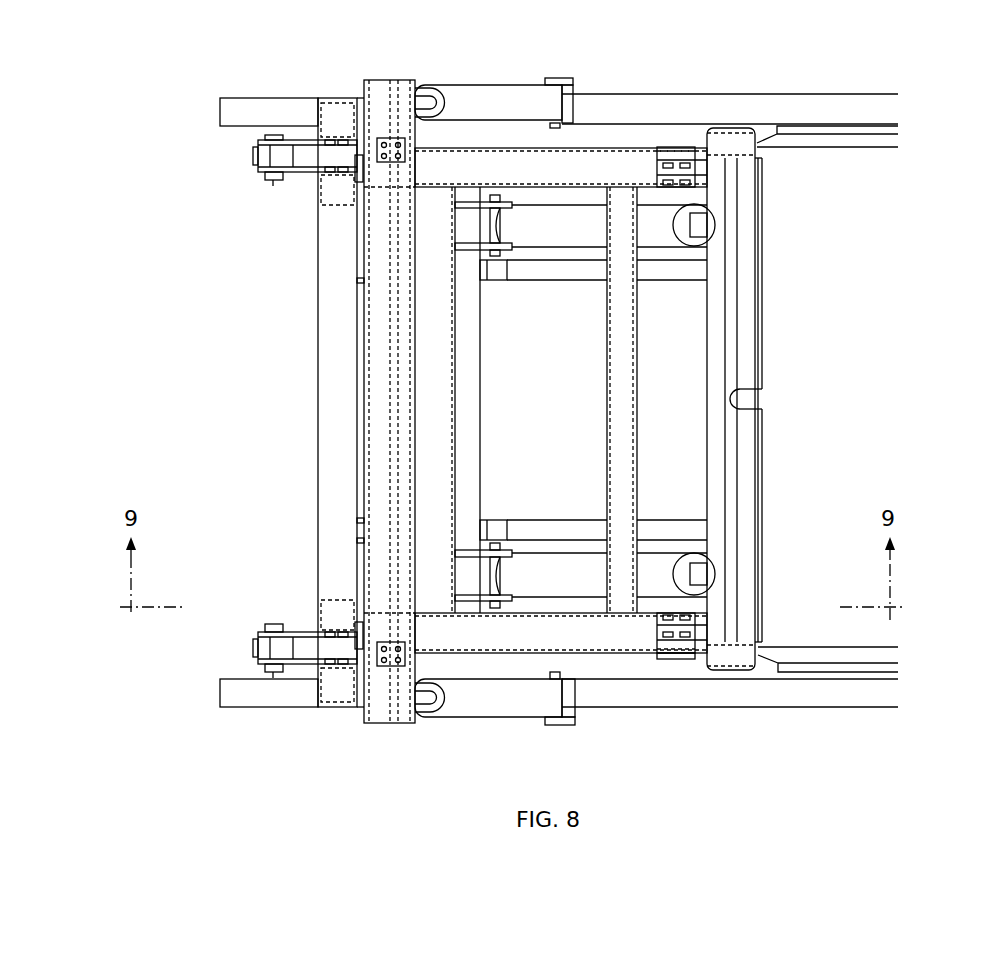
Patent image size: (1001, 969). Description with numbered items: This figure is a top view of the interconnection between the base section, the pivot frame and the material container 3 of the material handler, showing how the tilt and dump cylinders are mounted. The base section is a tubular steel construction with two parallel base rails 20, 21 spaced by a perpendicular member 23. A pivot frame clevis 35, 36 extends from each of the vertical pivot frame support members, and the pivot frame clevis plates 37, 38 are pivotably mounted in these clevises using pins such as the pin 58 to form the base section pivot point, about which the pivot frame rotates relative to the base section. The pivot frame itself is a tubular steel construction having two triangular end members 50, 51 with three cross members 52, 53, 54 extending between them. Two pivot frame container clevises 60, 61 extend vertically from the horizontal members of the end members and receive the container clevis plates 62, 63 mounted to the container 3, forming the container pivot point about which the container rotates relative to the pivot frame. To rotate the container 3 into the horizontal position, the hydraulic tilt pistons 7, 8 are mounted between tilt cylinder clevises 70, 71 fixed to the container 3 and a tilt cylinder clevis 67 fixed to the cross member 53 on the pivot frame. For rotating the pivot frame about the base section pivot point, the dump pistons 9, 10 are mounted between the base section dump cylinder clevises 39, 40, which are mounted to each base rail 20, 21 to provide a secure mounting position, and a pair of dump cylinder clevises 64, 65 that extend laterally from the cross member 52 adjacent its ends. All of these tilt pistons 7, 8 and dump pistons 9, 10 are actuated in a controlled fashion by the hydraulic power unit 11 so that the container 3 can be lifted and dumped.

The material container 3 is at (906, 223).
The hydraulic tilt piston 7 is at (686, 211).
The hydraulic tilt piston 8 is at (690, 553).
The dump piston 9 is at (476, 90).
The dump piston 10 is at (497, 712).
The hydraulic power unit 11 is at (536, 395).
The base rail 20 is at (795, 712).
The base rail 21 is at (822, 100).
The perpendicular member 23 is at (326, 506).
The pivot frame clevis 35 is at (308, 630).
The pivot frame clevis 36 is at (290, 180).
The pivot frame clevis plate 37 is at (255, 648).
The pivot frame clevis plate 38 is at (255, 157).
The base section dump cylinder clevis 39 is at (545, 82).
The base section dump cylinder clevis 40 is at (565, 722).
The triangular end member 50 is at (488, 640).
The triangular end member 51 is at (577, 165).
The cross member 52 is at (368, 260).
The cross member 53 is at (442, 322).
The cross member 54 is at (622, 222).
The pin 58 is at (268, 136).
The pivot frame container clevis 60 is at (676, 656).
The pivot frame container clevis 61 is at (672, 150).
The container clevis plate 62 is at (690, 637).
The container clevis plate 63 is at (700, 165).
The dump cylinder clevis 64 is at (425, 717).
The dump cylinder clevis 65 is at (425, 88).
The tilt cylinder clevis 67 is at (490, 252).
The tilt cylinder clevis 70 is at (705, 599).
The tilt cylinder clevis 71 is at (700, 246).